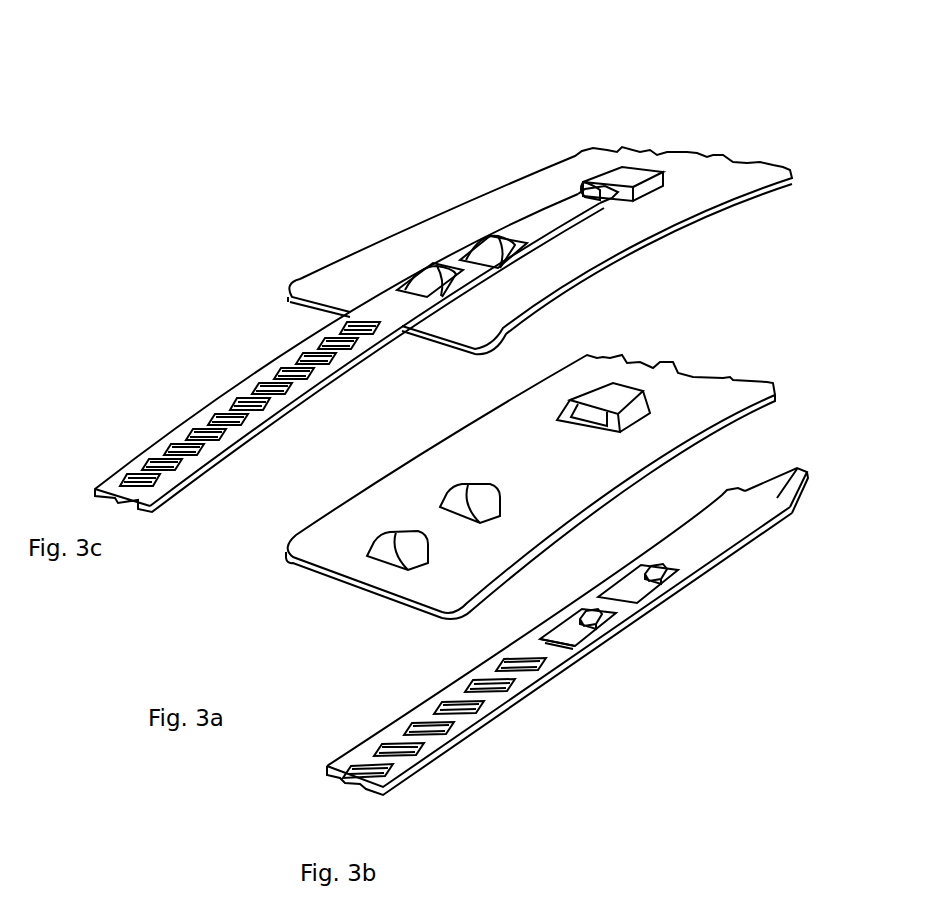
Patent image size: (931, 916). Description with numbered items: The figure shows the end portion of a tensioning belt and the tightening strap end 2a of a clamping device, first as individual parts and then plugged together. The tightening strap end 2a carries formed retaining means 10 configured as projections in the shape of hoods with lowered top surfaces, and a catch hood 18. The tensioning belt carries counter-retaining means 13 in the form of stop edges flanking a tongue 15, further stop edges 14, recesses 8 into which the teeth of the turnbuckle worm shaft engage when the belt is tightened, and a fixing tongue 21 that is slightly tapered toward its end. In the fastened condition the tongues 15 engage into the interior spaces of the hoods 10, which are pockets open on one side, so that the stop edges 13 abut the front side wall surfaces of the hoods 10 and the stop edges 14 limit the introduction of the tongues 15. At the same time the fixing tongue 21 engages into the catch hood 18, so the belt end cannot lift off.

In FIG. 3C, the tightening strap end 2a is at (360, 265).
In FIG. 3A, the tightening strap end 2a is at (333, 533).
In FIG. 3C, the recesses 8 is at (202, 427).
In FIG. 3B, the recesses 8 is at (477, 713).
In FIG. 3C, the retaining means 10 is at (493, 242).
In FIG. 3A, the retaining means 10 is at (472, 500).
In FIG. 3C, the counter-retaining means 13 is at (522, 242).
In FIG. 3B, the counter-retaining means 13 is at (673, 578).
In FIG. 3B, the stop edges 14 is at (565, 633).
In FIG. 3B, the tongue 15 is at (593, 632).
In FIG. 3C, the catch hood 18 is at (633, 170).
In FIG. 3A, the catch hood 18 is at (612, 398).
In FIG. 3C, the fixing tongue 21 is at (622, 201).
In FIG. 3B, the fixing tongue 21 is at (780, 483).